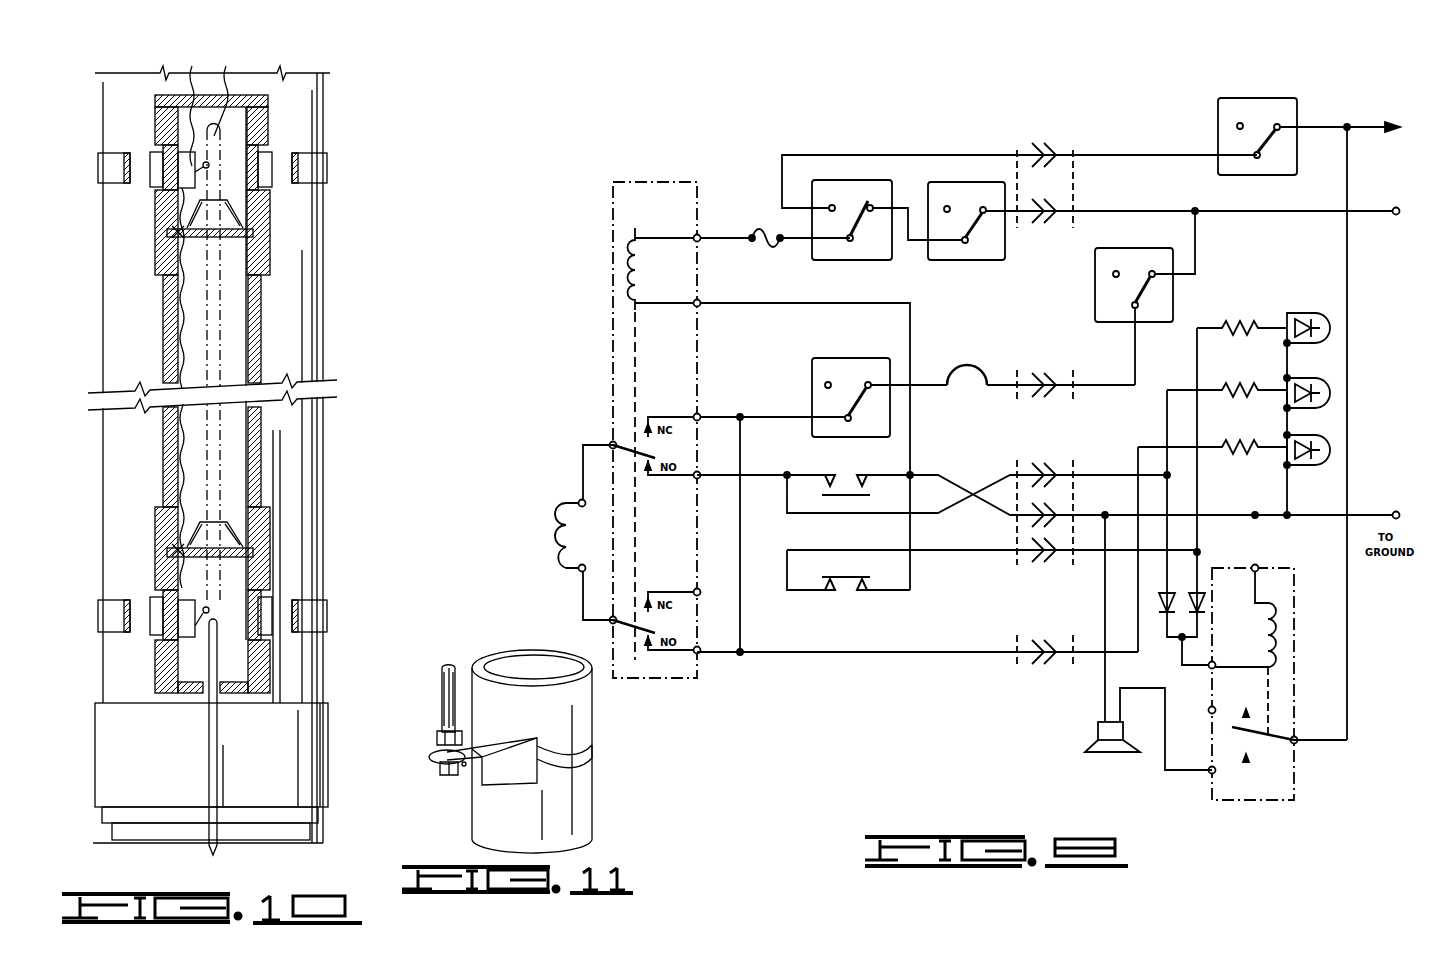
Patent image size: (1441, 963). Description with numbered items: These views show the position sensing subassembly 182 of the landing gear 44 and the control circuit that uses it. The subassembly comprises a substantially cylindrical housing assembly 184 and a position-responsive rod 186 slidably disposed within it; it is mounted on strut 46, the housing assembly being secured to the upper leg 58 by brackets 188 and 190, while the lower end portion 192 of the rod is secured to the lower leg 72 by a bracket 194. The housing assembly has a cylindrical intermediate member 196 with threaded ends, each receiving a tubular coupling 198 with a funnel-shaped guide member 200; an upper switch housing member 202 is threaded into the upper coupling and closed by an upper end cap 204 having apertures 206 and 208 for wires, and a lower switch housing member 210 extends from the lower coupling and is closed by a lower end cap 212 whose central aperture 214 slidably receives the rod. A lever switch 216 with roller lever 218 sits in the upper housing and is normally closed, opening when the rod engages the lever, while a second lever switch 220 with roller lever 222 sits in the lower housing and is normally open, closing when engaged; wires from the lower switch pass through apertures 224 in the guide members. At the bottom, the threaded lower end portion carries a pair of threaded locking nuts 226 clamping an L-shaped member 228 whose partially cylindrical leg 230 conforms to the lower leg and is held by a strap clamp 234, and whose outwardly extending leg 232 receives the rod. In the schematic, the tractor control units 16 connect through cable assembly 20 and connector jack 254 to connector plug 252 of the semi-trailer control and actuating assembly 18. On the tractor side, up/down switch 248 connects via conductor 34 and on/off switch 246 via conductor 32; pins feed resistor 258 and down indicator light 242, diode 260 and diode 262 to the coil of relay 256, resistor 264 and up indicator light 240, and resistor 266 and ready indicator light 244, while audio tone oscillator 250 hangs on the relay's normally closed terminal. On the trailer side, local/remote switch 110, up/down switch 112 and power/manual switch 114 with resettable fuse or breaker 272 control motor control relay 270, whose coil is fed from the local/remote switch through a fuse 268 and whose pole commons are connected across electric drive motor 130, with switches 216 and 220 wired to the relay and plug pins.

In FIG. 9, the tractor control units 16 is at (1175, 132).
In FIG. 9, the semi-trailer control and actuating assembly 18 is at (886, 128).
In FIG. 9, the cable assembly 20 is at (1042, 128).
In FIG. 9, the conductor 32 is at (1370, 222).
In FIG. 9, the conductor 34 is at (1362, 135).
In FIG. 10, the landing gear 44 is at (297, 471).
In FIG. 10, the strut 46 is at (312, 326).
In FIG. 10, the upper leg 58 is at (303, 271).
In FIG. 10, the lower leg 72 is at (295, 836).
In FIG. 11, the lower leg 72 is at (560, 810).
In FIG. 9, the local/remote switch 110 is at (843, 180).
In FIG. 9, the up/down switch 112 is at (950, 182).
In FIG. 9, the power/manual switch 114 is at (830, 358).
In FIG. 9, the electric drive motor 130 is at (553, 525).
In FIG. 10, the position sensing subassembly 182 is at (262, 431).
In FIG. 10, the housing assembly 184 is at (262, 301).
In FIG. 10, the position-responsive rod 186 is at (208, 728).
In FIG. 11, the position-responsive rod 186 is at (445, 680).
In FIG. 10, the bracket 188 is at (106, 168).
In FIG. 10, the bracket 190 is at (106, 616).
In FIG. 11, the lower end portion 192 is at (445, 708).
In FIG. 11, the bracket 194 is at (463, 766).
In FIG. 10, the cylindrical intermediate member 196 is at (255, 351).
In FIG. 10, the tubular coupling 198 is at (255, 233).
In FIG. 10, the guide member 200 is at (232, 214).
In FIG. 10, the upper switch housing member 202 is at (327, 162).
In FIG. 10, the upper end cap 204 is at (268, 118).
In FIG. 10, the aperture 206 is at (240, 95).
In FIG. 10, the aperture 208 is at (190, 95).
In FIG. 10, the lower switch housing member 210 is at (212, 610).
In FIG. 10, the lower end cap 212 is at (270, 666).
In FIG. 10, the aperture 214 is at (216, 705).
In FIG. 10, the lever switch 216 is at (185, 160).
In FIG. 9, the lever switch 216 is at (843, 597).
In FIG. 10, the roller lever 218 is at (210, 165).
In FIG. 10, the lever switch 220 is at (185, 615).
In FIG. 9, the lever switch 220 is at (840, 472).
In FIG. 10, the roller lever 222 is at (240, 596).
In FIG. 10, the apertures 224 is at (175, 232).
In FIG. 11, the threaded locking nuts 226 is at (440, 740).
In FIG. 11, the L-shaped member 228 is at (462, 735).
In FIG. 11, the leg 230 is at (497, 780).
In FIG. 11, the leg 232 is at (487, 741).
In FIG. 11, the strap clamp 234 is at (572, 762).
In FIG. 9, the up indicator light 240 is at (1333, 331).
In FIG. 9, the down indicator light 242 is at (1333, 393).
In FIG. 9, the ready indicator light 244 is at (1333, 451).
In FIG. 9, the on/off switch 246 is at (1133, 248).
In FIG. 9, the up/down switch 248 is at (1258, 100).
In FIG. 9, the audio tone oscillator 250 is at (1117, 744).
In FIG. 9, the connector plug 252 is at (1025, 148).
In FIG. 9, the connector jack 254 is at (1068, 153).
In FIG. 9, the relay 256 is at (1294, 636).
In FIG. 9, the resistor 258 is at (1250, 385).
In FIG. 9, the diode 260 is at (1190, 596).
In FIG. 9, the diode 262 is at (1160, 594).
In FIG. 9, the resistor 264 is at (1250, 323).
In FIG. 9, the resistor 266 is at (1250, 442).
In FIG. 9, the fuse 268 is at (762, 232).
In FIG. 9, the motor control relay 270 is at (658, 182).
In FIG. 9, the resettable fuse or breaker 272 is at (968, 373).